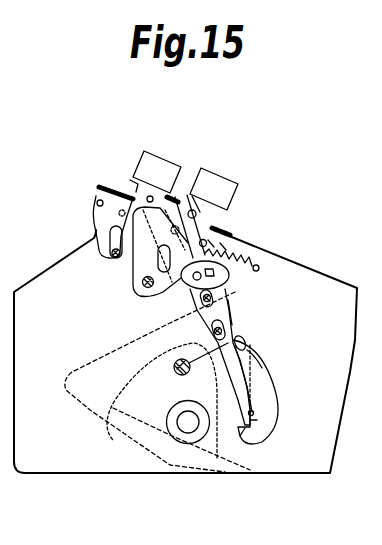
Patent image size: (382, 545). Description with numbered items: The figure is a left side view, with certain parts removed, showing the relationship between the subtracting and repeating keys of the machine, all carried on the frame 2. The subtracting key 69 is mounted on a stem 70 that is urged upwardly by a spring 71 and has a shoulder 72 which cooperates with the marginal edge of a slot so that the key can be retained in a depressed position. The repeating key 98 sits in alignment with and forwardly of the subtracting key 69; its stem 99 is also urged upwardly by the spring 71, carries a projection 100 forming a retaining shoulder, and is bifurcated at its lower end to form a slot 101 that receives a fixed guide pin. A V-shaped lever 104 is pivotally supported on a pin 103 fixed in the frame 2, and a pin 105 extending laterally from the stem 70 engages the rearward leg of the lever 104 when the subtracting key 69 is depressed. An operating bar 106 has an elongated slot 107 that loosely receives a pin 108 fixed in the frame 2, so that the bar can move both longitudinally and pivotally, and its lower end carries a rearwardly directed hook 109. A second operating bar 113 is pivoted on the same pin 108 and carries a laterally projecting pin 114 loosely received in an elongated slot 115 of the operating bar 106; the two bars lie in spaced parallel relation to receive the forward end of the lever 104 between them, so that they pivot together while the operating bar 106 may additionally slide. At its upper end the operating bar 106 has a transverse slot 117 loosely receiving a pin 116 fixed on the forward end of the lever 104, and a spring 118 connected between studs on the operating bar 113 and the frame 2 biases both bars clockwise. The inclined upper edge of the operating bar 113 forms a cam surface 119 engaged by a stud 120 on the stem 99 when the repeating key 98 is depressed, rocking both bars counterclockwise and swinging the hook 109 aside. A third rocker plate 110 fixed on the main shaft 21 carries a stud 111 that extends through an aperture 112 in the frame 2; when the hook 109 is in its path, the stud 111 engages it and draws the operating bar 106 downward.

The frame 2 is at (62, 257).
The main shaft 21 is at (193, 424).
The subtracting key 69 is at (140, 163).
The stem 70 is at (151, 196).
The spring 71 is at (125, 217).
The shoulder 72 is at (134, 191).
The repeating key 98 is at (192, 185).
The stem 99 is at (196, 206).
The projection 100 is at (228, 205).
The slot 101 is at (192, 300).
The pin 103 is at (145, 283).
The V-shaped lever 104 is at (137, 268).
The pin 105 is at (132, 183).
The operating bar 106 is at (268, 400).
The elongated slot 107 is at (244, 337).
The pin 108 is at (247, 357).
The hook 109 is at (254, 432).
The third rocker plate 110 is at (100, 416).
The stud 111 is at (178, 372).
The aperture 112 is at (253, 415).
The operating bar 113 is at (218, 238).
The pin 114 is at (237, 311).
The elongated slot 115 is at (197, 307).
The pin 116 is at (228, 290).
The slot 117 is at (215, 275).
The spring 118 is at (236, 256).
The cam surface 119 is at (234, 219).
The stud 120 is at (208, 210).